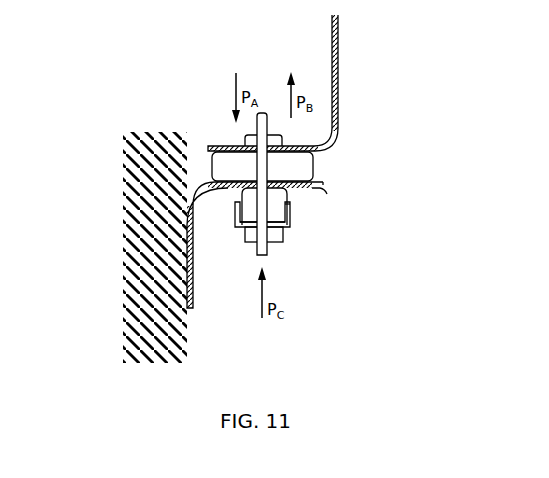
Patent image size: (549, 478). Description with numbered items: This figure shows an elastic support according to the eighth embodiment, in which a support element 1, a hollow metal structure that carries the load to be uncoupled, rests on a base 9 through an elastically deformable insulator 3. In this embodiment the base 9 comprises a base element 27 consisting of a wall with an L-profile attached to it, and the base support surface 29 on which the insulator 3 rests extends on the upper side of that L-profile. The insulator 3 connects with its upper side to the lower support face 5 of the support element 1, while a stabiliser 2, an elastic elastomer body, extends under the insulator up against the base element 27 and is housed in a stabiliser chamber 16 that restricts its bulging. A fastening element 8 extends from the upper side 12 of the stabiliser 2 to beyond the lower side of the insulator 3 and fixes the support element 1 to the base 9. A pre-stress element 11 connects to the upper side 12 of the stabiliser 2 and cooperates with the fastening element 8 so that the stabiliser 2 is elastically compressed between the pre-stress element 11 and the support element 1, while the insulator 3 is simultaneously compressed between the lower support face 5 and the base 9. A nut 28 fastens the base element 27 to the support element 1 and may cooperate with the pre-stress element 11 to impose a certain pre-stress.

The support element 1 is at (337, 50).
The stabiliser 2 is at (272, 207).
The insulator 3 is at (302, 166).
The lower support face 5 is at (212, 157).
The fastening element 8 is at (257, 158).
The base 9 is at (165, 320).
The pre-stress element 11 is at (273, 237).
The upper side of the stabiliser 12 is at (250, 245).
The stabiliser chamber 16 is at (236, 216).
The base element 27 is at (310, 188).
The nut 28 is at (277, 140).
The base support surface 29 is at (287, 205).